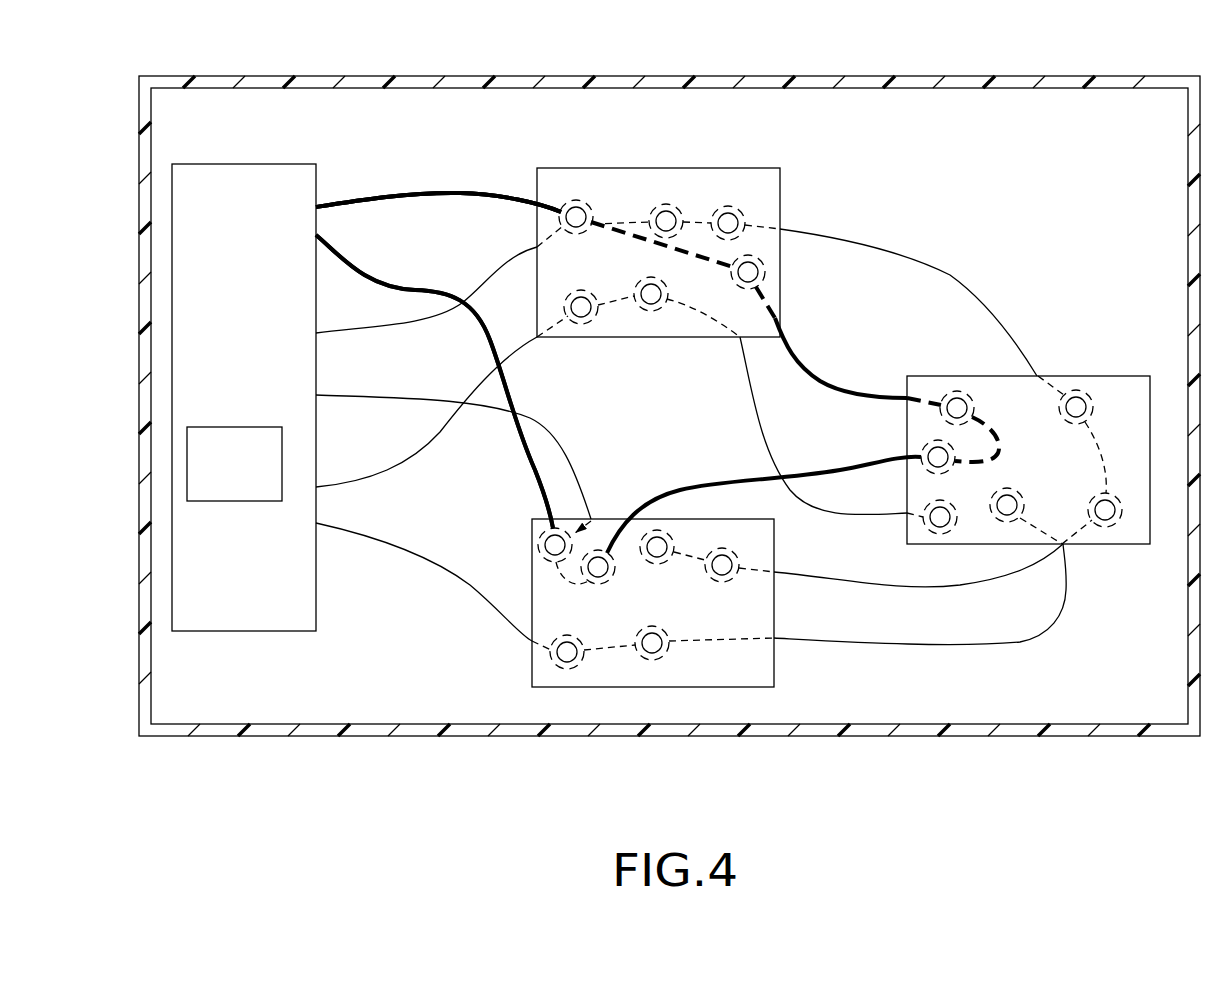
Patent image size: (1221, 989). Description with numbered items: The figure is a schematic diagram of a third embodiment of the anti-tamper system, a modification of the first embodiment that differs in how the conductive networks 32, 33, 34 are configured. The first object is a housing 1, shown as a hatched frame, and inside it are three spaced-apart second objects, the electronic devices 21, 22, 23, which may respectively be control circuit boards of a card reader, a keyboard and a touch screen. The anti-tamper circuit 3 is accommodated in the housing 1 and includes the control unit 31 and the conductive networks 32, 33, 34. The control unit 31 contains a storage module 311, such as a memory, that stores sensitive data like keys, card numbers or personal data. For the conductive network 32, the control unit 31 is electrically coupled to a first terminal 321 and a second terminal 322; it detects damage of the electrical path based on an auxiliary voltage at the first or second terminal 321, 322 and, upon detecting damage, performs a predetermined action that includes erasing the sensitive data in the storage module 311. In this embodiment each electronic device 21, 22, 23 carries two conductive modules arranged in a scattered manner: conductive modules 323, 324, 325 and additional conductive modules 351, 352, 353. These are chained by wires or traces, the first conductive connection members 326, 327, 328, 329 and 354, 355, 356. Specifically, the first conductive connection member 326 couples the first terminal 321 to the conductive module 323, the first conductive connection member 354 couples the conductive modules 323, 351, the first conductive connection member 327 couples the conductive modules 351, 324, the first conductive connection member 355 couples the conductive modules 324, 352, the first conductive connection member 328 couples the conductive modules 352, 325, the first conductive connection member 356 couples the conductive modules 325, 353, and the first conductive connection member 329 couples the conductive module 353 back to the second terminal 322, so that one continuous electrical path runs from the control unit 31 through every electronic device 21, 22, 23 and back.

The housing 1 is at (974, 76).
The anti-tamper circuit 3 is at (981, 257).
The electronic device 21 is at (782, 206).
The electronic device 22 is at (1118, 403).
The electronic device 23 is at (777, 657).
The control unit 31 is at (287, 164).
The storage module 311 is at (235, 427).
The conductive network 32 is at (426, 190).
The first terminal 321 is at (317, 205).
The second terminal 322 is at (318, 235).
The conductive module 323 is at (574, 199).
The conductive module 324 is at (957, 390).
The conductive module 325 is at (630, 639).
The first conductive connection member 326 is at (483, 194).
The first conductive connection member 327 is at (820, 382).
The first conductive connection member 328 is at (740, 478).
The first conductive connection member 329 is at (445, 290).
The conductive network 33 is at (352, 340).
The conductive network 34 is at (381, 476).
The conductive module 351 is at (669, 203).
The conductive module 352 is at (919, 469).
The conductive module 353 is at (649, 524).
The first conductive connection member 354 is at (640, 253).
The first conductive connection member 355 is at (1003, 450).
The first conductive connection member 356 is at (575, 588).